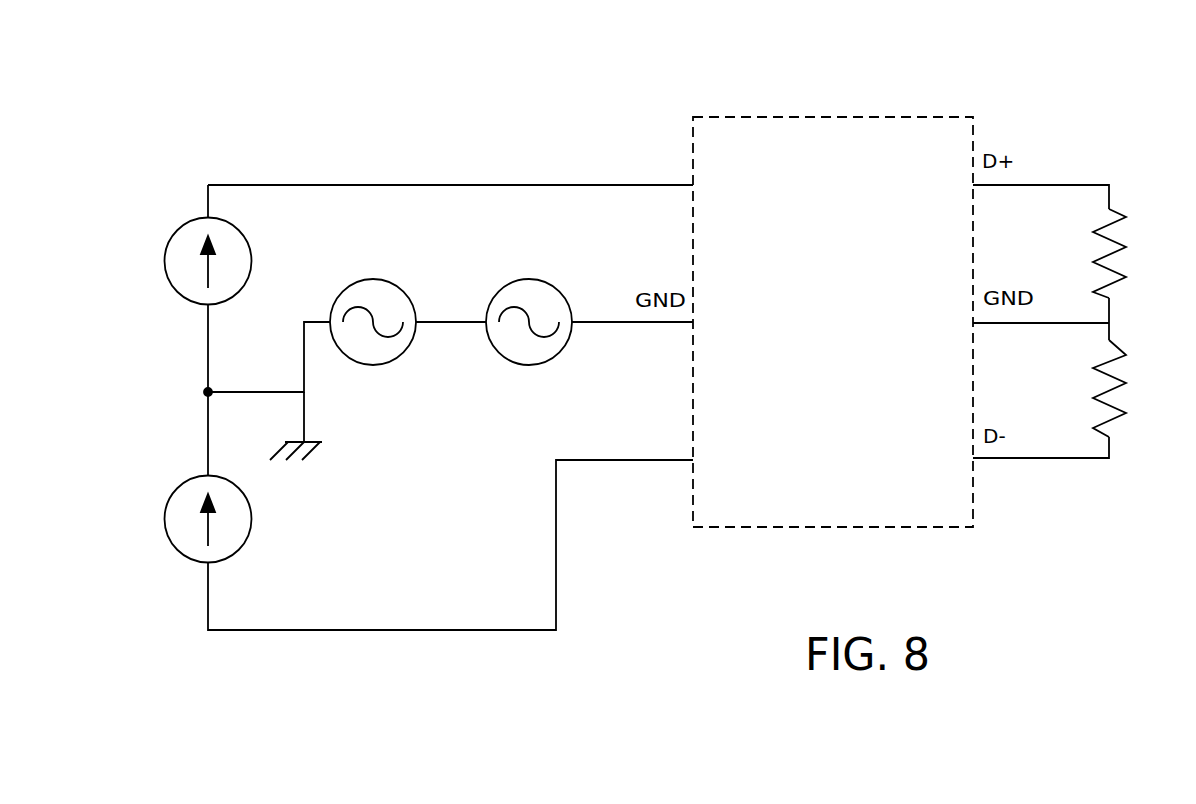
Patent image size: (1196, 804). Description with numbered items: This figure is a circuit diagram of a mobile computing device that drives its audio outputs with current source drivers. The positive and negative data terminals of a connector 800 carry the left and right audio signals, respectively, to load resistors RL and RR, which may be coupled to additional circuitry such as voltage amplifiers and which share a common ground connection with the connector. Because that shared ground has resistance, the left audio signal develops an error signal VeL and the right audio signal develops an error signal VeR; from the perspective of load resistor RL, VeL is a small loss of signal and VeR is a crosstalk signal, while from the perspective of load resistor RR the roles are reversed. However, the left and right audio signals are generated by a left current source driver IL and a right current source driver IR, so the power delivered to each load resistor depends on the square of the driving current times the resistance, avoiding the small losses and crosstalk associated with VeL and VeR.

The connector 800 is at (937, 117).
The left current source driver IL is at (192, 261).
The right current source driver IR is at (192, 519).
The error signal VeL is at (373, 304).
The error signal VeR is at (529, 304).
The load resistor RL is at (1134, 253).
The load resistor RR is at (1135, 388).